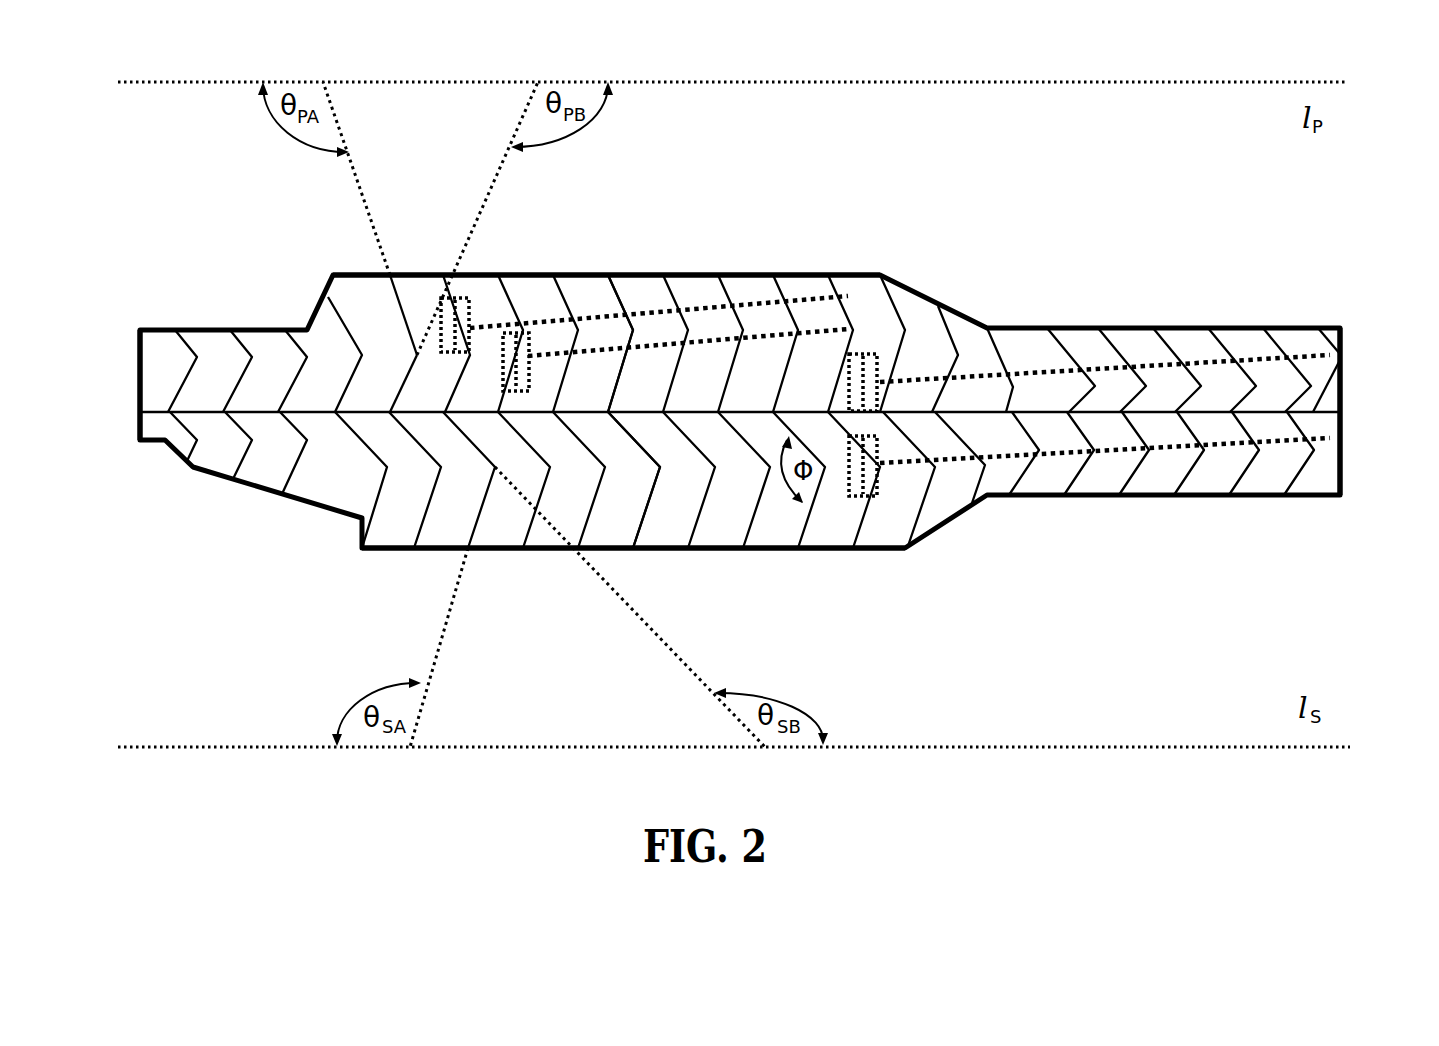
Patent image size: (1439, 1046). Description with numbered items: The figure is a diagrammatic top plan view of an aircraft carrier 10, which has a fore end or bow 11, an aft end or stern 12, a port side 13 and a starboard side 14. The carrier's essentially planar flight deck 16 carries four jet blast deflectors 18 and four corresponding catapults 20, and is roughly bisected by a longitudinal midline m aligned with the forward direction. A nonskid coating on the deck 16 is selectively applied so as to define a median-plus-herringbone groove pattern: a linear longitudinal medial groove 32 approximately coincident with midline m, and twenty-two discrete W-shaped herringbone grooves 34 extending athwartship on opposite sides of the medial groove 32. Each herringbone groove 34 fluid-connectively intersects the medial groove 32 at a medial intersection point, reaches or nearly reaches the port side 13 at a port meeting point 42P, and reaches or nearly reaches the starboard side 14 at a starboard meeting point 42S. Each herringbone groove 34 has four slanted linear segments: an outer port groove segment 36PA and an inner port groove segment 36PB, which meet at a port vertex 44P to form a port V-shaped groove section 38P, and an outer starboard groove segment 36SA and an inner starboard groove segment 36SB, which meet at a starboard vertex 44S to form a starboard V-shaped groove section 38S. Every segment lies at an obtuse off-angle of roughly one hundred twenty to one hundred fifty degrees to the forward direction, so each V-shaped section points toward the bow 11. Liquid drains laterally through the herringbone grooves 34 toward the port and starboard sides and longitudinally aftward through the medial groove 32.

The aircraft carrier 10 is at (740, 477).
The fore end (bow) 11 is at (1353, 412).
The aft end (stern) 12 is at (125, 408).
The lefthand side (port) 13 is at (743, 260).
The righthand side (starboard) 14 is at (762, 550).
The flight deck 16 is at (996, 551).
The jet blast deflectors 18 is at (450, 330).
The catapults 20 is at (640, 308).
The medial groove 32 is at (325, 415).
The herringbone grooves 34 is at (698, 520).
The outer port groove segment 36PA is at (404, 315).
The inner port groove segment 36PB is at (397, 395).
The outer starboard groove segment 36SA is at (480, 511).
The inner starboard groove segment 36SB is at (422, 522).
The port V-shaped groove section 38P is at (292, 387).
The starboard V-shaped groove section 38S is at (305, 437).
The port meeting point 42P is at (608, 275).
The starboard meeting point 42S is at (633, 550).
The port vertex 44P is at (630, 332).
The starboard vertex 44S is at (660, 468).